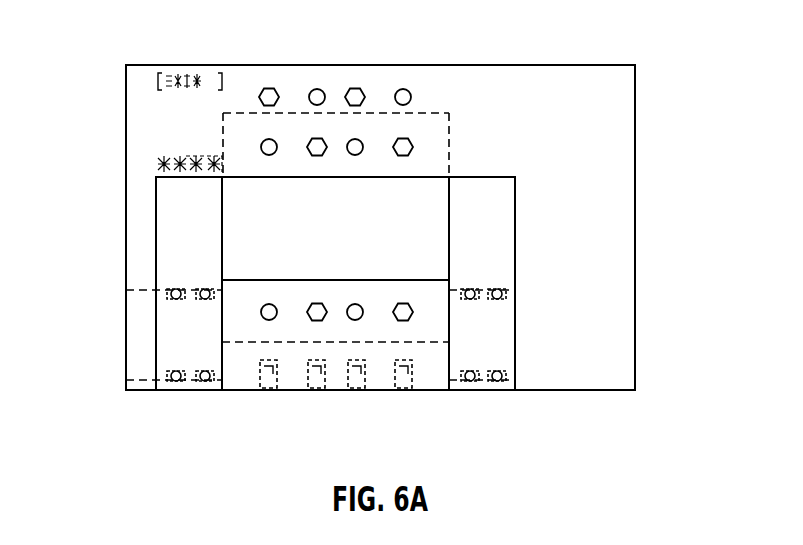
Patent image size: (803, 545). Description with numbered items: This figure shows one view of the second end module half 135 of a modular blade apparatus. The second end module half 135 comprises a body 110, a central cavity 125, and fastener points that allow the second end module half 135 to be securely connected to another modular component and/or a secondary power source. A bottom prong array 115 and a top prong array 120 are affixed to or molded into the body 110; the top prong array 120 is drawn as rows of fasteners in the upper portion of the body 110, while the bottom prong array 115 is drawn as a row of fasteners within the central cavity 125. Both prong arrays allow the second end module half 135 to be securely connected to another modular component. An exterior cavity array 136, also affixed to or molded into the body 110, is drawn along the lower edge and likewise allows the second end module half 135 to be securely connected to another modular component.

The body 110 is at (594, 78).
The bottom prong array 115 is at (420, 296).
The top prong array 120 is at (420, 84).
The central cavity 125 is at (263, 232).
The second end module half 135 is at (147, 27).
The exterior cavity array 136 is at (420, 392).